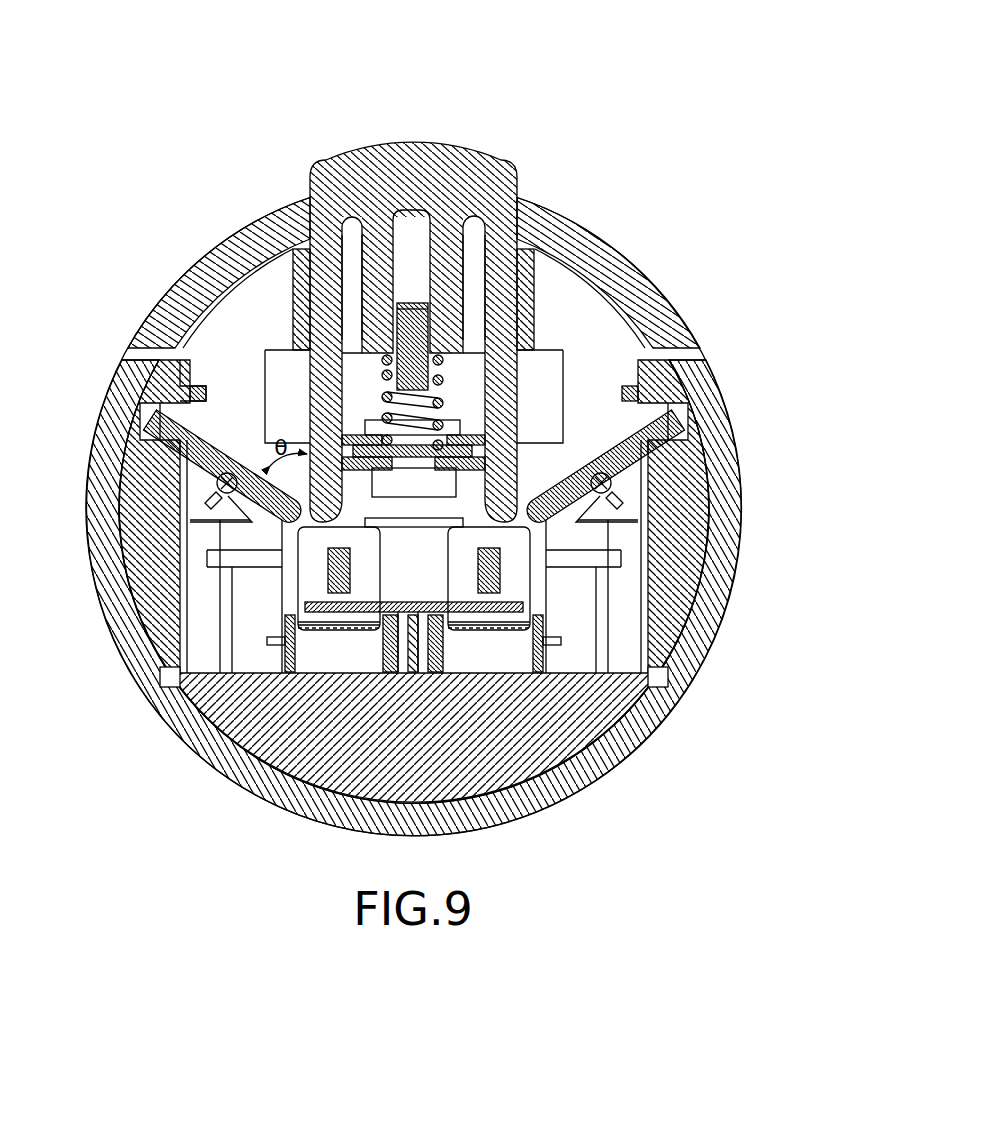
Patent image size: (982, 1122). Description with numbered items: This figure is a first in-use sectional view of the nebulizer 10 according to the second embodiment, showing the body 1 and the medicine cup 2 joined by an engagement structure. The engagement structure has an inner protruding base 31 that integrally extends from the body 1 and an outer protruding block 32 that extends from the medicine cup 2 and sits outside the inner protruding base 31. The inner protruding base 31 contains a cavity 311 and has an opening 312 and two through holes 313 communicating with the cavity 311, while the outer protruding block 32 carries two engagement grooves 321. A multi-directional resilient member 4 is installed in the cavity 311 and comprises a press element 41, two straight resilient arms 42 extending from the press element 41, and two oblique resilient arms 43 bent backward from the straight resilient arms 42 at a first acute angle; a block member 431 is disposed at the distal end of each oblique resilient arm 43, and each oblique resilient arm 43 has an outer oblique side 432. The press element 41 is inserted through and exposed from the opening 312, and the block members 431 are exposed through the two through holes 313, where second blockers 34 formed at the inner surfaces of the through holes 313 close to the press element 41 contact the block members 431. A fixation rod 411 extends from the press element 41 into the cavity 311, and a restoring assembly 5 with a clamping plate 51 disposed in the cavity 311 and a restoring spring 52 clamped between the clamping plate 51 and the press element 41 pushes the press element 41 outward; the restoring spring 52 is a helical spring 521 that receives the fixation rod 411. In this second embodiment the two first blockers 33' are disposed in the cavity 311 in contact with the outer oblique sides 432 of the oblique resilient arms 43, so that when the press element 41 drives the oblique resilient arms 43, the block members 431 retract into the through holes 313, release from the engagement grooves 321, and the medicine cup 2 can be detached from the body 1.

The nebulizer 10 is at (398, 23).
The body 1 is at (603, 226).
The medicine cup 2 is at (744, 538).
The inner protruding base 31 is at (480, 243).
The cavity 311 is at (633, 277).
The opening 312 is at (318, 186).
The through holes 313 is at (190, 394).
The outer protruding block 32 is at (441, 563).
The engagement grooves 321 is at (640, 394).
The first blockers 33' is at (324, 500).
The second blockers 34 is at (205, 405).
The multi-directional resilient member 4 is at (424, 284).
The press element 41 is at (410, 160).
The fixation rod 411 is at (412, 362).
The straight resilient arms 42 is at (310, 397).
The oblique resilient arms 43 is at (224, 520).
The block members 431 is at (176, 447).
The outer oblique side 432 is at (200, 477).
The restoring assembly 5 is at (439, 487).
The clamping plate 51 is at (405, 460).
The restoring spring 52 is at (448, 377).
The helical spring 521 is at (466, 413).